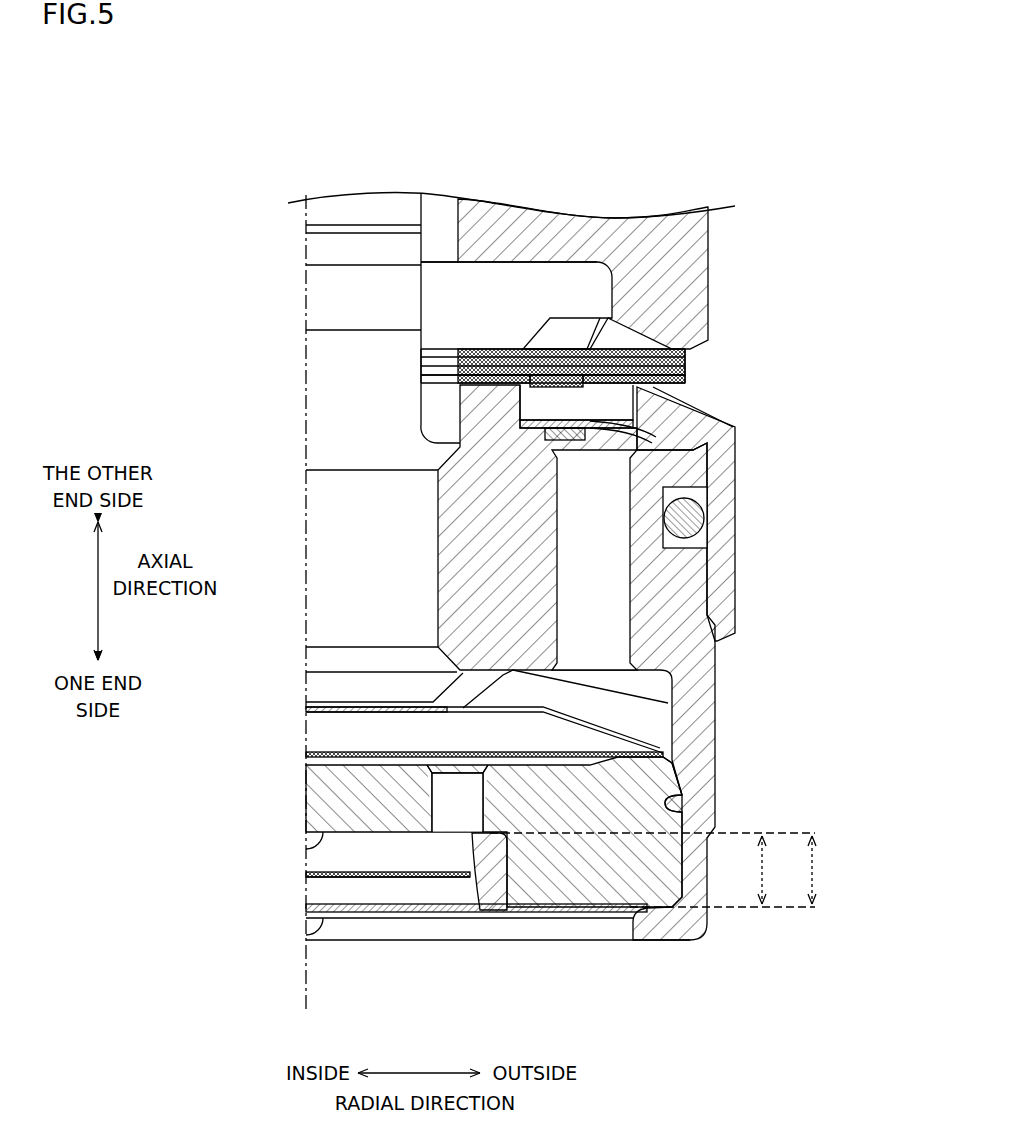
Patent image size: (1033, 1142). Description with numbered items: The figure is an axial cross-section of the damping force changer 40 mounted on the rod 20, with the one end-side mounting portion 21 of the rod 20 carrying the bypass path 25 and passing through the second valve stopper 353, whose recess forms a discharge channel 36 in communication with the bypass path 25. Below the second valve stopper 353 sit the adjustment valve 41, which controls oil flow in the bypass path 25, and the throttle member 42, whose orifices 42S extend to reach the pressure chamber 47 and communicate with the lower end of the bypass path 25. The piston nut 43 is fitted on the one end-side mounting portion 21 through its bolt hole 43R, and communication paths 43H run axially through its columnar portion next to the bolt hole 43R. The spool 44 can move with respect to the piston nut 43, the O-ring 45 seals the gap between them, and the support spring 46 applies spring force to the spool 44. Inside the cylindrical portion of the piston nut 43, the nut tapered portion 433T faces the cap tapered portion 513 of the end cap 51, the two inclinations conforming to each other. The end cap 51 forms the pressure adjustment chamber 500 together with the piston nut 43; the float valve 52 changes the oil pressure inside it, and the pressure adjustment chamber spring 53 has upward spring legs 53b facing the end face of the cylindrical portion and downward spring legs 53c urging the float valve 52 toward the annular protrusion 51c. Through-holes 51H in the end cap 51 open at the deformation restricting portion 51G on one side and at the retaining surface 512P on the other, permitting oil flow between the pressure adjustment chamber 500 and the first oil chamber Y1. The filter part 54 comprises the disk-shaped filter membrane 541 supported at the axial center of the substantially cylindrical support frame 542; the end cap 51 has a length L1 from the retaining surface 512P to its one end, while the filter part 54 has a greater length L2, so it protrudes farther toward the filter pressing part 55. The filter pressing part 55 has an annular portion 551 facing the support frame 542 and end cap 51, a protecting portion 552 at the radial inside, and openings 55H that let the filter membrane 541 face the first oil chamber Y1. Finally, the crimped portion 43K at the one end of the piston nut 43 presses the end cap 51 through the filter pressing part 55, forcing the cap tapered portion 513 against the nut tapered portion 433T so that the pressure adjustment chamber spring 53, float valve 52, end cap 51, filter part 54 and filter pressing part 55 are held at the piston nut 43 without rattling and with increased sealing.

The damping force changer 40 is at (744, 152).
The rod 20 is at (432, 213).
The bypass path 25 is at (440, 246).
The second valve stopper 353 is at (708, 262).
The discharge channel 36 is at (496, 307).
The adjustment valve 41 is at (688, 366).
The throttle member 42 is at (600, 384).
The orifices 42S is at (487, 380).
The pressure chamber 47 is at (613, 417).
The support spring 46 is at (655, 438).
The spool 44 is at (736, 470).
The O-ring 45 is at (690, 518).
The piston nut 43 is at (716, 660).
The communication paths 43H is at (600, 555).
The bolt hole 43R is at (447, 578).
The nut tapered portion 433T is at (667, 810).
The crimped portion 43K is at (665, 940).
The one end-side mounting portion 21 is at (445, 628).
The pressure adjustment chamber 500 is at (634, 721).
The pressure adjustment chamber spring 53 is at (325, 710).
The upward spring legs 53b is at (655, 692).
The downward spring legs 53c is at (664, 748).
The float valve 52 is at (666, 754).
The end cap 51 is at (694, 882).
The through-holes 51H is at (455, 790).
The deformation restricting portion 51G is at (336, 757).
The cap tapered portion 513 is at (672, 774).
The retaining surface 512P is at (322, 840).
The annular protrusion 51c is at (633, 757).
The filter part 54 is at (327, 857).
The filter membrane 541 is at (385, 880).
The support frame 542 is at (470, 890).
The filter pressing part 55 is at (470, 903).
The annular portion 551 is at (592, 912).
The openings 55H is at (469, 918).
The protecting portion 552 is at (320, 927).
The first oil chamber Y1 is at (547, 981).
The length L1 is at (652, 870).
The length L2 is at (824, 870).